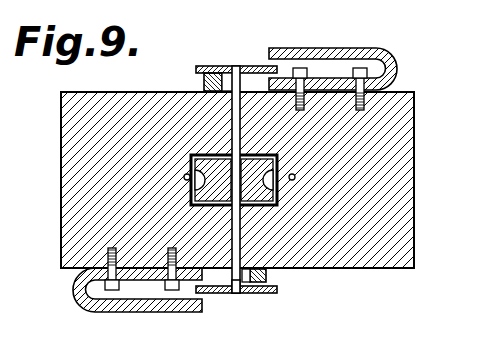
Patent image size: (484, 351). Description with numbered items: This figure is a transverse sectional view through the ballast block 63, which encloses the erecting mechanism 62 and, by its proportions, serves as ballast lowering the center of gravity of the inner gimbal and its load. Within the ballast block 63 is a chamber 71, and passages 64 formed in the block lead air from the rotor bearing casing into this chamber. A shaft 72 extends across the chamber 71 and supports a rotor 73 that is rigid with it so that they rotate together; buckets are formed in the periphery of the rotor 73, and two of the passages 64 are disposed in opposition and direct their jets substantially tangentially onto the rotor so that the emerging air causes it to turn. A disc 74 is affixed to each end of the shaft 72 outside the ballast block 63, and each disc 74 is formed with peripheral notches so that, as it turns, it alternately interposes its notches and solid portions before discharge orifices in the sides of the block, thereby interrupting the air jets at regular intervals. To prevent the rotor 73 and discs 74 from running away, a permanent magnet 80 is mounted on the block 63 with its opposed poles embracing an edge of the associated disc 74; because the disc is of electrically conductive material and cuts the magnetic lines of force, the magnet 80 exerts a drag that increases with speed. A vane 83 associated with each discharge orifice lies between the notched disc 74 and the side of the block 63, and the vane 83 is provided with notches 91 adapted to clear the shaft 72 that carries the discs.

The erecting mechanism 62 is at (254, 63).
The ballast block 63 is at (377, 131).
The passages 64 is at (184, 178).
The chamber 71 is at (191, 163).
The shaft 72 is at (234, 294).
The rotor 73 is at (257, 183).
The discs 74 is at (210, 66).
The permanent magnet 80 is at (340, 48).
The vane 83 is at (204, 82).
The notches 91 is at (226, 73).